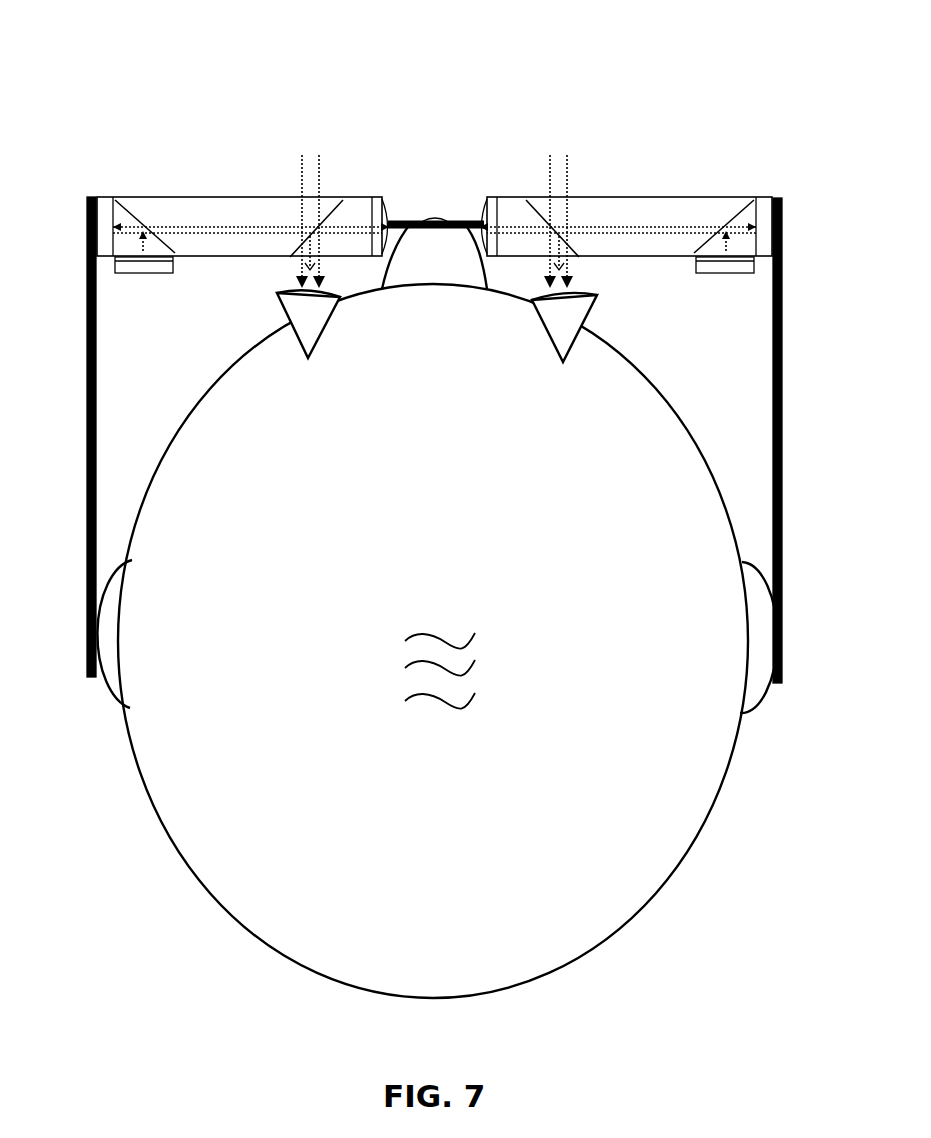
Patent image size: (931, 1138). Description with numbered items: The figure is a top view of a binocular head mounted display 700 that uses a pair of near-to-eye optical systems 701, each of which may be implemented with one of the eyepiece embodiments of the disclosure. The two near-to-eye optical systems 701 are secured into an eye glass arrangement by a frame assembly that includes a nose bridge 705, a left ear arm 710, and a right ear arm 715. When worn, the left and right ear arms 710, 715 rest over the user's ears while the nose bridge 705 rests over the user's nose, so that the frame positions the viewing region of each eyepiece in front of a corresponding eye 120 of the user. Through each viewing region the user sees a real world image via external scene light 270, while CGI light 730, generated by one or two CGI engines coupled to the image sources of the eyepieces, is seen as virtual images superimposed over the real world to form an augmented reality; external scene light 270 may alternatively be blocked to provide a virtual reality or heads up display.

The head mounted display 700 is at (706, 52).
The near-to-eye optical system 701 is at (151, 155).
The external scene light 270 is at (302, 158).
The nose bridge 705 is at (457, 219).
The CGI light 730 is at (290, 257).
The eye 120 is at (317, 345).
The left ear arm 710 is at (88, 438).
The right ear arm 715 is at (781, 440).